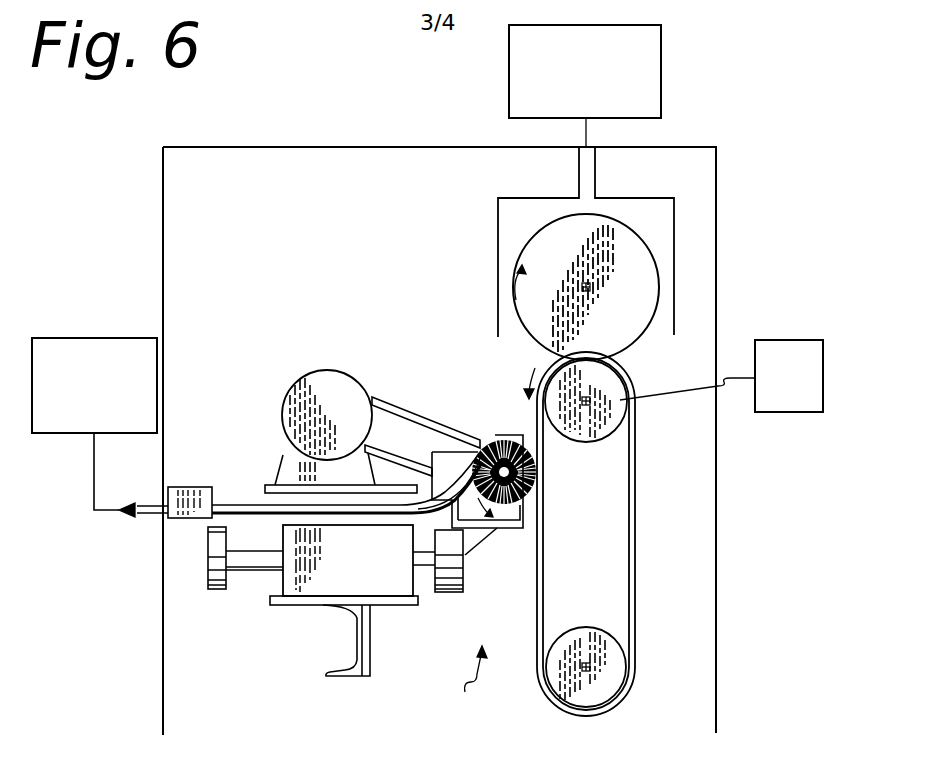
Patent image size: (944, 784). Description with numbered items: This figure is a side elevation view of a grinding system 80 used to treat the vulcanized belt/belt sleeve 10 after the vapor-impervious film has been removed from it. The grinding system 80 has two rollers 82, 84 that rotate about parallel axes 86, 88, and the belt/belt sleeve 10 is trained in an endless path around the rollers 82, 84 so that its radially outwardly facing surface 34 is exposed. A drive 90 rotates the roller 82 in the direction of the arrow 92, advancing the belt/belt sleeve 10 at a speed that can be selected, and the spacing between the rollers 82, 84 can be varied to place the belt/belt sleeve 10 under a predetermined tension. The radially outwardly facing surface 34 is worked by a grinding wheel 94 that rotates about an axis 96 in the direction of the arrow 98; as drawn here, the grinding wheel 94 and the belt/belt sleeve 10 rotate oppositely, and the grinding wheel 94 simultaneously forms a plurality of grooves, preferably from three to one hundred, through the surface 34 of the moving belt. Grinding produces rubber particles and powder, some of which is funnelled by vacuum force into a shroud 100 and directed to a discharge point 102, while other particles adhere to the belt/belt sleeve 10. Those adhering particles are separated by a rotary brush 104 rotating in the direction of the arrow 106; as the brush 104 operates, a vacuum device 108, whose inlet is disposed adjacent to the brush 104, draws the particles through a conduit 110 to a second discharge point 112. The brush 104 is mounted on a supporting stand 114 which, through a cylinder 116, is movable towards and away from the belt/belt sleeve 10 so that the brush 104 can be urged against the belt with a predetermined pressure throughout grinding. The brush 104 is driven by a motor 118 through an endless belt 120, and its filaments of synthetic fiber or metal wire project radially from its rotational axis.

The belt/belt sleeve 10 is at (622, 534).
The radially outwardly facing surface 34 is at (640, 540).
The grinding system 80 is at (468, 686).
The roller 82 is at (617, 398).
The roller 84 is at (625, 653).
The axis 86 is at (590, 400).
The axis 88 is at (588, 667).
The drive 90 is at (777, 403).
The arrow 92 is at (517, 374).
The grinding wheel 94 is at (615, 277).
The axis 96 is at (590, 287).
The arrow 98 is at (520, 277).
The shroud 100 is at (498, 247).
The discharge point 102 is at (602, 108).
The rotary brush 104 is at (536, 473).
The arrow 106 is at (500, 522).
The vacuum device 108 is at (443, 455).
The conduit 110 is at (240, 500).
The discharge point 112 is at (112, 423).
The supporting stand 114 is at (498, 530).
The cylinder 116 is at (370, 574).
The motor 118 is at (343, 370).
The endless belt 120 is at (400, 405).